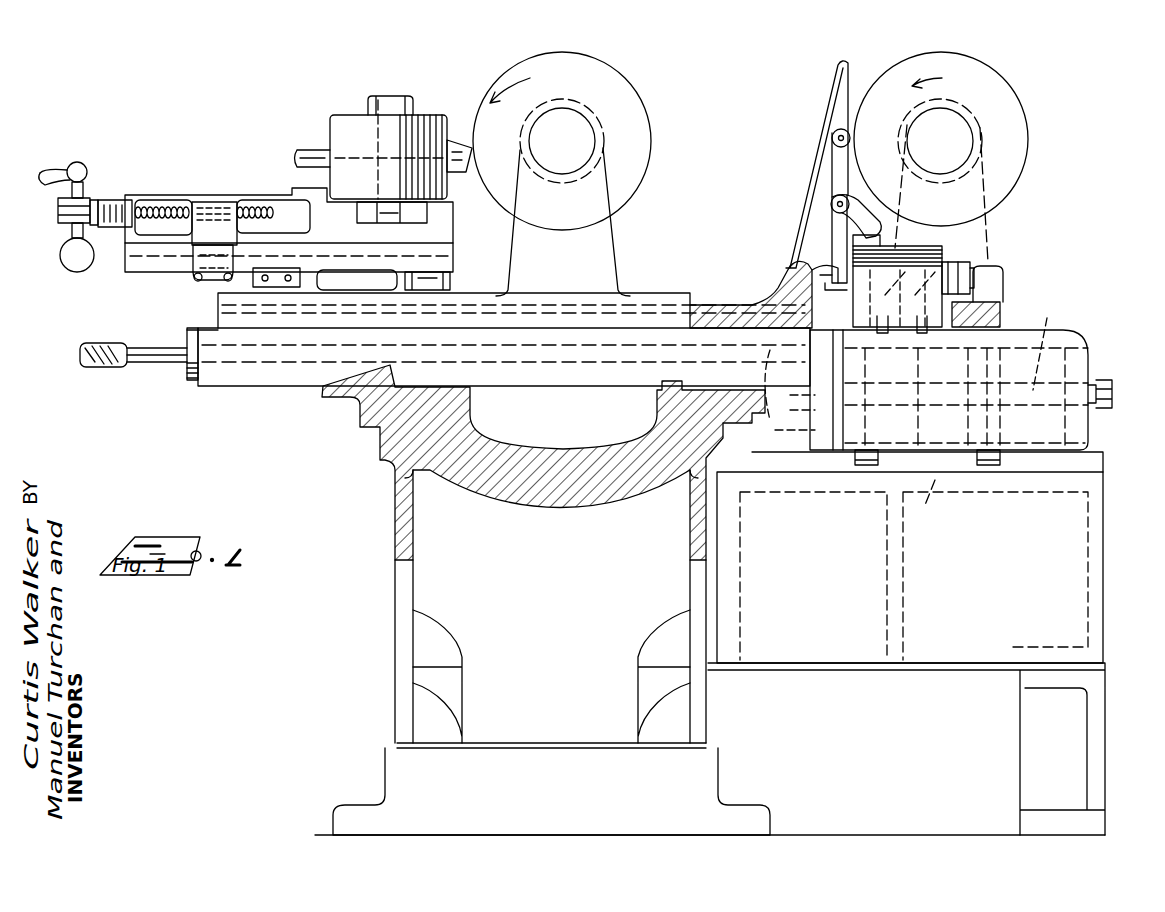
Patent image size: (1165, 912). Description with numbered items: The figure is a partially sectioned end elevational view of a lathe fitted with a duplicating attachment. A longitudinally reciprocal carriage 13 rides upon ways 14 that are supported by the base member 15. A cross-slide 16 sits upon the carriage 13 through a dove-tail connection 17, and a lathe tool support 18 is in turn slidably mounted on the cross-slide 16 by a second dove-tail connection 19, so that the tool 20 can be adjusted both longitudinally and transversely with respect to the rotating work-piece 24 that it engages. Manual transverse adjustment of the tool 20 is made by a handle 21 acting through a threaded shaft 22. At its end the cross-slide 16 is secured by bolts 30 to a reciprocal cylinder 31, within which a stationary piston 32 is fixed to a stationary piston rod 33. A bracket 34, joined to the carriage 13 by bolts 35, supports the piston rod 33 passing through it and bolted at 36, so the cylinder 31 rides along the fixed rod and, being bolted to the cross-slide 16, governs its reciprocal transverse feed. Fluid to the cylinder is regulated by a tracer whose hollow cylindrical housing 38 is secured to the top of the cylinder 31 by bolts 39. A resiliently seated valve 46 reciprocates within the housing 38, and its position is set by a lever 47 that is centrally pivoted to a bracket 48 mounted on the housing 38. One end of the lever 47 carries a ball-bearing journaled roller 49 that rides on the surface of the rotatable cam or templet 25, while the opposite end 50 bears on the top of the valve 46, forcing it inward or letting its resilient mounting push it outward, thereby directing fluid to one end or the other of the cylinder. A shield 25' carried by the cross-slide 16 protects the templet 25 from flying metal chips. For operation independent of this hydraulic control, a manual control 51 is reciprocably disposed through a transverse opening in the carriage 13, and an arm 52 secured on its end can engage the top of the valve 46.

The carriage 13 is at (235, 378).
The ways 14 is at (360, 420).
The base member 15 is at (395, 565).
The cross-slide 16 is at (218, 305).
The dove-tail connection 17 is at (190, 333).
The tool support 18 is at (332, 118).
The dove-tail connection 19 is at (142, 255).
The tool 20 is at (455, 140).
The handle 21 is at (42, 172).
The threaded shaft 22 is at (182, 205).
The work-piece 24 is at (633, 183).
The templet 25 is at (973, 139).
The shield 25' is at (808, 163).
The bolts 30 is at (858, 250).
The reciprocal cylinder 31 is at (948, 470).
The stationary piston 32 is at (920, 503).
The piston rod 33 is at (1046, 342).
The bracket 34 is at (1090, 345).
The bolts 35 is at (785, 355).
The bolt 36 is at (1117, 390).
The housing 38 is at (948, 252).
The bolts 39 is at (910, 285).
The valve 46 is at (962, 172).
The lever 47 is at (830, 172).
The bracket 48 is at (832, 204).
The roller 49 is at (832, 132).
The opposite end of lever 50 is at (815, 272).
The manual control 51 is at (122, 366).
The arm 52 is at (758, 298).